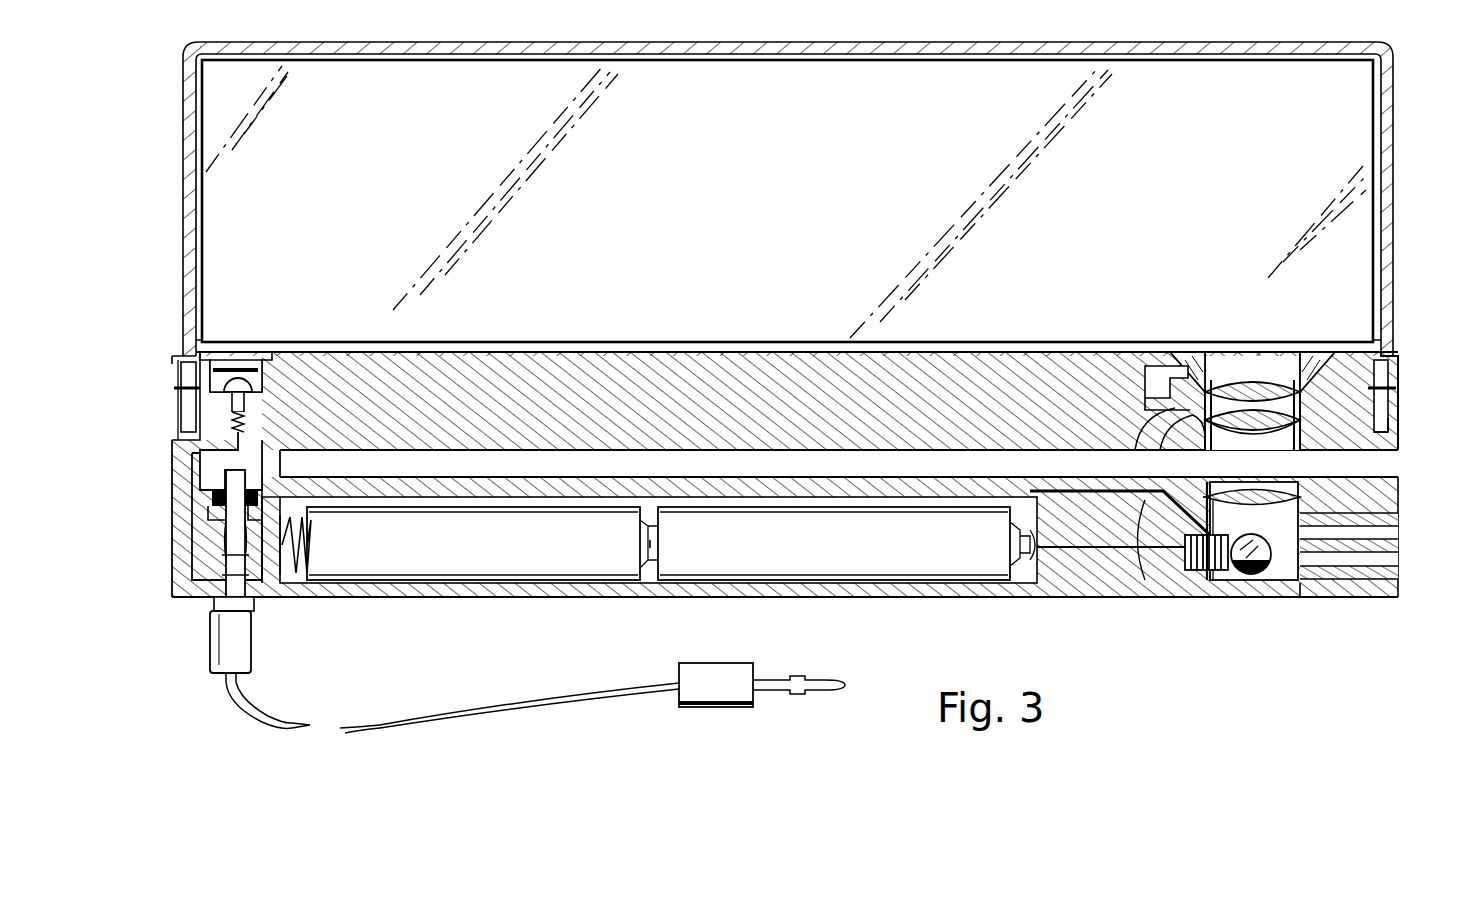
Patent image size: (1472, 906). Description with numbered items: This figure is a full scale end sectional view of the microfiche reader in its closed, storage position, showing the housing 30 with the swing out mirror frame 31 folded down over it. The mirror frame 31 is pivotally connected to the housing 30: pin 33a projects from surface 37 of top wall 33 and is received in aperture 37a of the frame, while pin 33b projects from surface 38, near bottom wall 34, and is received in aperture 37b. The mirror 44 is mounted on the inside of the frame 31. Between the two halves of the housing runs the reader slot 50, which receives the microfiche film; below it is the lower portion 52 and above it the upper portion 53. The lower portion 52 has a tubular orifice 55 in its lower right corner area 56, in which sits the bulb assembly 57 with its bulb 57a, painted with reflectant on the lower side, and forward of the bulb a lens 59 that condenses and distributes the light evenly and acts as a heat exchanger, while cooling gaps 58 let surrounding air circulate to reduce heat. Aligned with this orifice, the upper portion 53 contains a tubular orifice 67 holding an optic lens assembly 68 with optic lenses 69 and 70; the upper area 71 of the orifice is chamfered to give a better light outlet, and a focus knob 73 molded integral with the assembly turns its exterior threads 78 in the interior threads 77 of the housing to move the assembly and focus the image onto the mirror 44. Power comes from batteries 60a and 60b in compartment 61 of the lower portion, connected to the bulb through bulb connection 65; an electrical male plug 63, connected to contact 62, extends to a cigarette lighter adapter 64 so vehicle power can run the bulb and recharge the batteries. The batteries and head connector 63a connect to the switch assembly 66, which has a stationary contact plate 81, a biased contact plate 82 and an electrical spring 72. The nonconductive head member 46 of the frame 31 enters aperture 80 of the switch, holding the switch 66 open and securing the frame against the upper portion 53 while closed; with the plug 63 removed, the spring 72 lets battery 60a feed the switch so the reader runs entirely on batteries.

The housing 30 is at (172, 456).
The swing out mirror frame 31 is at (1393, 140).
The top wall 33 is at (1392, 432).
The pin 33a is at (1396, 388).
The pin 33b is at (174, 388).
The bottom wall 34 is at (174, 416).
The surface 37 is at (1390, 396).
The aperture 37a is at (1392, 366).
The aperture 37b is at (180, 345).
The surface 38 is at (176, 366).
The mirror 44 is at (831, 216).
The head member 46 is at (222, 360).
The reader slot 50 is at (1390, 466).
The lower portion 52 is at (1398, 580).
The upper portion 53 is at (1400, 424).
The tubular orifice 55 is at (1268, 572).
The lower right corner area 56 is at (1398, 594).
The bulb assembly 57 is at (1205, 578).
The bulb 57a is at (1245, 576).
The cooling gaps 58 is at (1390, 530).
The lens 59 is at (1265, 490).
The battery 60a is at (484, 552).
The battery 60b is at (845, 552).
The compartment 61 is at (648, 582).
The contact 62 is at (240, 644).
The electrical male plug 63 is at (255, 598).
The head connector 63a is at (1163, 575).
The cigarette lighter adapter 64 is at (712, 690).
The bulb connection 65 is at (1103, 552).
The switch assembly 66 is at (290, 386).
The tubular orifice 67 is at (1256, 440).
The optic lens assembly 68 is at (1203, 440).
The optic lens 69 is at (1255, 382).
The optic lens 70 is at (1303, 360).
The upper area 71 is at (1205, 358).
The electrical spring 72 is at (215, 498).
The focus knob 73 is at (1170, 365).
The interior threads 77 is at (1136, 450).
The exterior threads 78 is at (1165, 450).
The aperture 80 is at (248, 378).
The stationary contact plate 81 is at (272, 360).
The contact plate 82 is at (240, 380).